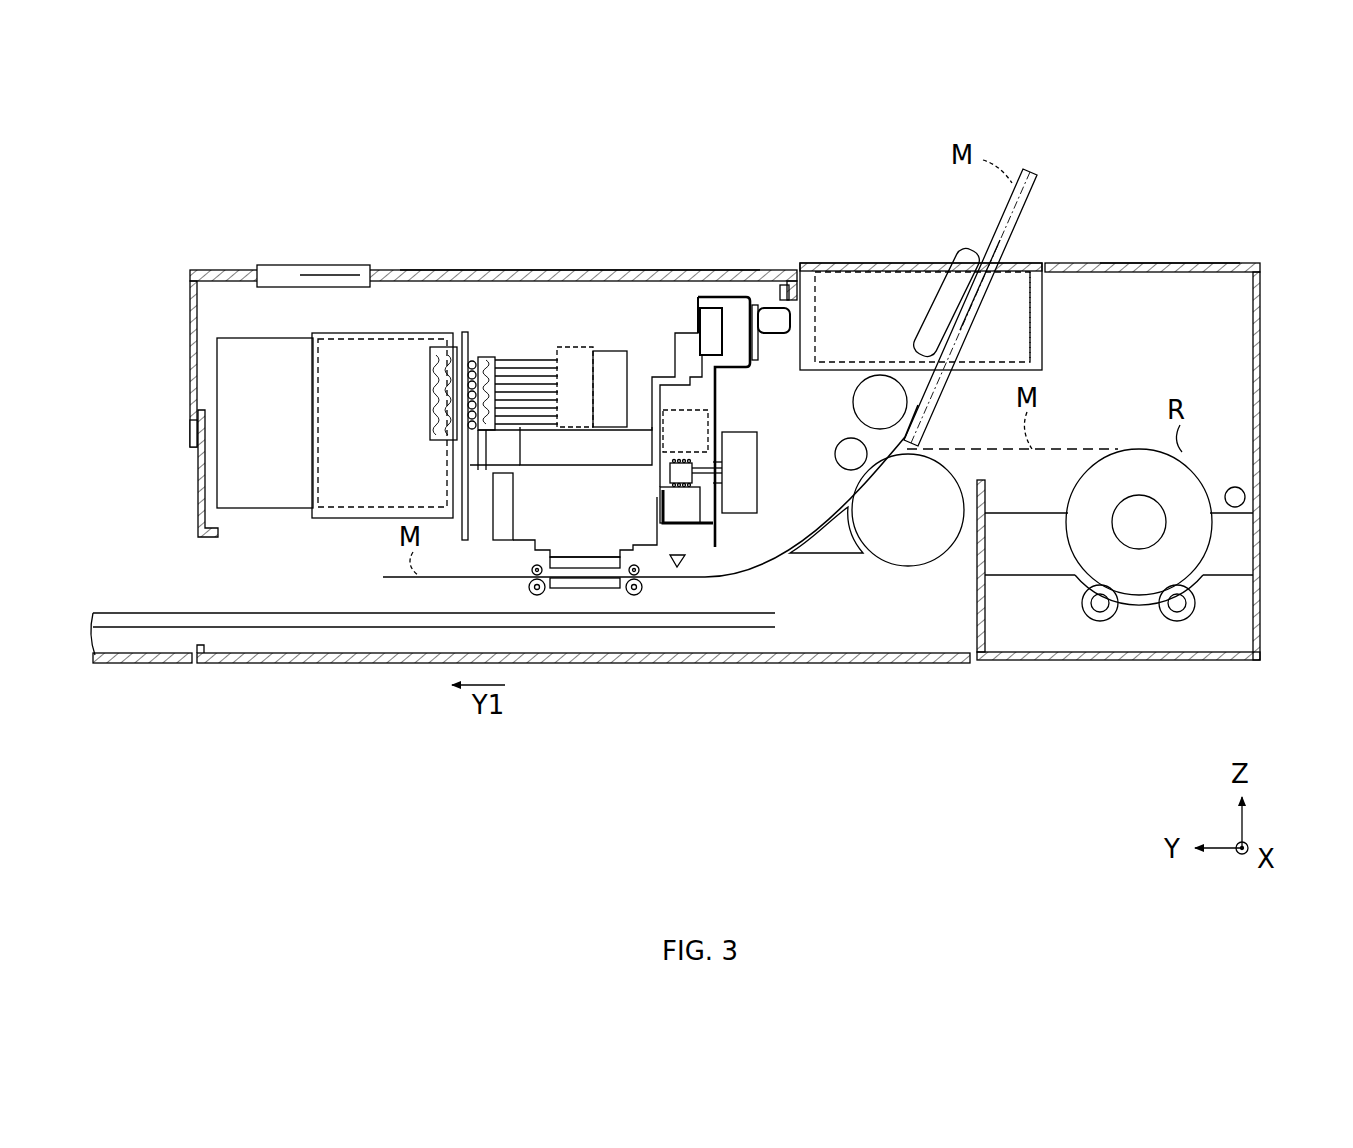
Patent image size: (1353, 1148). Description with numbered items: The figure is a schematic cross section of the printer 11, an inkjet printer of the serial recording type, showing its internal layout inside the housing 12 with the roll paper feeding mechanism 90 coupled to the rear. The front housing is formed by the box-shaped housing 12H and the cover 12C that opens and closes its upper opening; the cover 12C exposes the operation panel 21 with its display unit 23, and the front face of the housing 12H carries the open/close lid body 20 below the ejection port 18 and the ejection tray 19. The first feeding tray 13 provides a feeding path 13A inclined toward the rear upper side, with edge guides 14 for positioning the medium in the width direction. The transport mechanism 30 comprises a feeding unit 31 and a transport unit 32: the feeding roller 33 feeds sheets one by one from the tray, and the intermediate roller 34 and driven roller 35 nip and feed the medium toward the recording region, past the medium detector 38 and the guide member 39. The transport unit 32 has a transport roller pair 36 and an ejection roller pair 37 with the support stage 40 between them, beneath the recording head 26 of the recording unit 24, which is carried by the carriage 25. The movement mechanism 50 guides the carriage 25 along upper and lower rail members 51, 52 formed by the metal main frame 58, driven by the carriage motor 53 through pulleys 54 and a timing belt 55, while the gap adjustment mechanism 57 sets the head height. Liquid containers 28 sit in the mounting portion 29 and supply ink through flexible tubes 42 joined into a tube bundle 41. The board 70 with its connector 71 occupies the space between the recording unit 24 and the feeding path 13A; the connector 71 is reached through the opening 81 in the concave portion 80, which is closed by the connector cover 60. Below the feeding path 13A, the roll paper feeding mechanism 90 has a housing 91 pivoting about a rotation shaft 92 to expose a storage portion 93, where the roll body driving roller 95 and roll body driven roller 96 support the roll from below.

The printer 11 is at (883, 103).
The housing 12 is at (195, 462).
The cover 12C is at (583, 268).
The housing 12H is at (200, 498).
The first feeding tray 13 is at (1037, 164).
The feeding path 13A is at (985, 302).
The edge guides 14 is at (968, 248).
The ejection port 18 is at (205, 535).
The ejection tray 19 is at (233, 612).
The lid body 20 is at (130, 664).
The operation panel 21 is at (332, 257).
The display unit 23 is at (268, 265).
The recording unit 24 is at (650, 420).
The carriage 25 is at (482, 450).
The recording head 26 is at (535, 548).
The liquid container 28 is at (282, 510).
The mounting portion 29 is at (343, 520).
The transport mechanism 30 is at (952, 440).
The feeding unit 31 is at (880, 574).
The transport unit 32 is at (735, 578).
The feeding roller 33 is at (853, 398).
The intermediate roller 34 is at (910, 566).
The driven roller 35 is at (835, 450).
The transport roller pair 36 is at (645, 585).
The ejection roller pair 37 is at (527, 588).
The medium detector 38 is at (690, 560).
The guide member 39 is at (815, 554).
The support stage 40 is at (585, 590).
The tube bundle 41 is at (526, 356).
The tube 42 is at (537, 430).
The movement mechanism 50 is at (690, 306).
The upper rail member 51 is at (657, 528).
The lower rail member 52 is at (745, 300).
The carriage motor 53 is at (760, 472).
The pulleys 54 is at (668, 478).
The timing belt 55 is at (668, 468).
The gap adjustment mechanism 57 is at (700, 405).
The main frame 58 is at (700, 520).
The connector cover 60 is at (865, 263).
The board 70 is at (772, 305).
The connector 71 is at (786, 275).
The concave portion 80 is at (1032, 345).
The opening 81 is at (812, 345).
The roll paper feeding mechanism 90 is at (1264, 244).
The housing 91 is at (1165, 263).
The rotation shaft 92 is at (1236, 487).
The storage portion 93 is at (1267, 611).
The roll body driving roller 95 is at (1102, 622).
The roll body driven roller 96 is at (1176, 622).